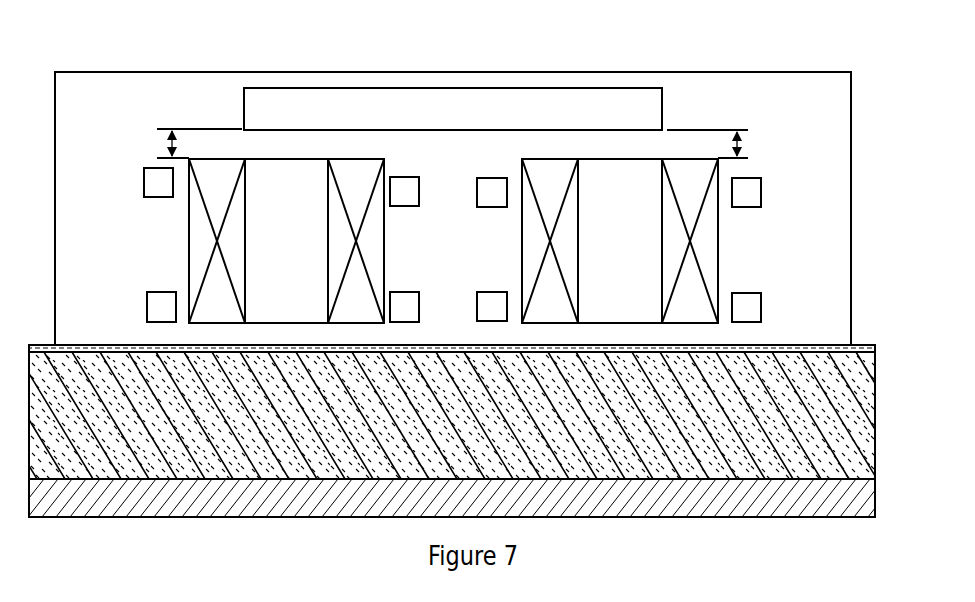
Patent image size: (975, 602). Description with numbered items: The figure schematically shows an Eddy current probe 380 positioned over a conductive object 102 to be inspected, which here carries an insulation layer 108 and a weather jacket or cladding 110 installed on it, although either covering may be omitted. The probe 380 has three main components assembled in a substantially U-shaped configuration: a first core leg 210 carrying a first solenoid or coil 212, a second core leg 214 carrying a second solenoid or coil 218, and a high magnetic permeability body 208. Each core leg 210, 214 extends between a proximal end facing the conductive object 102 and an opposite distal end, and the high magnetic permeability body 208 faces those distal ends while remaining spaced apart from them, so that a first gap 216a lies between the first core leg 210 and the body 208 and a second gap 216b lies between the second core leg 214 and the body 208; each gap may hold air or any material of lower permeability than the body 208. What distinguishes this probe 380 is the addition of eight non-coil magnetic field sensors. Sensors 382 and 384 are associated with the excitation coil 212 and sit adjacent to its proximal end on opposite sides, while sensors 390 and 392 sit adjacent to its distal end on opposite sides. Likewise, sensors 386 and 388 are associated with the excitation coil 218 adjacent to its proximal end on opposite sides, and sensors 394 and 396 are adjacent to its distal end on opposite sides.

The probe 380 is at (183, 57).
The high magnetic permeability body 208 is at (662, 106).
The first gap 216a is at (168, 146).
The second gap 216b is at (762, 128).
The first core leg 210 is at (307, 256).
The second core leg 214 is at (641, 256).
The first coil 212 is at (384, 159).
The second coil 218 is at (522, 159).
The magnetic field sensor 390 is at (144, 169).
The magnetic field sensor 382 is at (153, 292).
The magnetic field sensor 392 is at (392, 206).
The magnetic field sensor 384 is at (393, 292).
The magnetic field sensor 394 is at (500, 207).
The magnetic field sensor 386 is at (504, 292).
The magnetic field sensor 396 is at (750, 178).
The magnetic field sensor 388 is at (748, 292).
The weather jacket or cladding 110 is at (876, 345).
The insulation layer 108 is at (876, 398).
The conductive object 102 is at (778, 518).